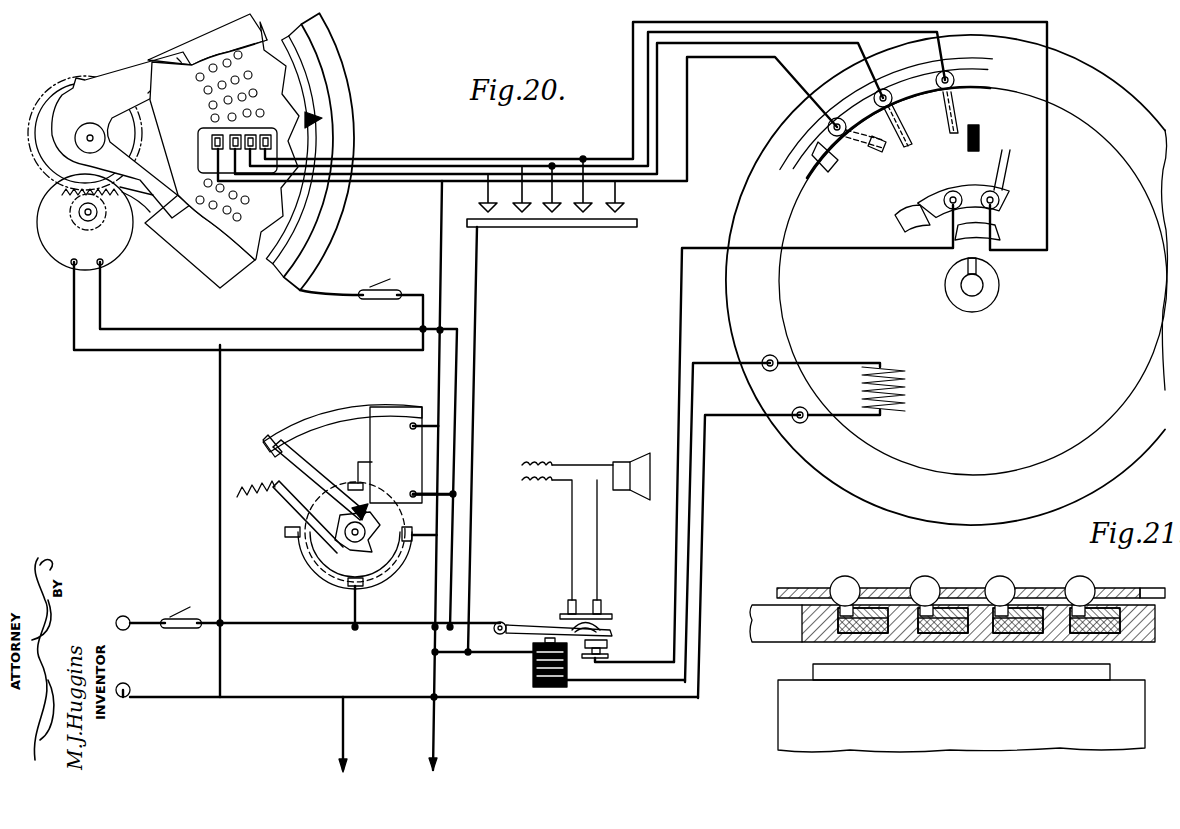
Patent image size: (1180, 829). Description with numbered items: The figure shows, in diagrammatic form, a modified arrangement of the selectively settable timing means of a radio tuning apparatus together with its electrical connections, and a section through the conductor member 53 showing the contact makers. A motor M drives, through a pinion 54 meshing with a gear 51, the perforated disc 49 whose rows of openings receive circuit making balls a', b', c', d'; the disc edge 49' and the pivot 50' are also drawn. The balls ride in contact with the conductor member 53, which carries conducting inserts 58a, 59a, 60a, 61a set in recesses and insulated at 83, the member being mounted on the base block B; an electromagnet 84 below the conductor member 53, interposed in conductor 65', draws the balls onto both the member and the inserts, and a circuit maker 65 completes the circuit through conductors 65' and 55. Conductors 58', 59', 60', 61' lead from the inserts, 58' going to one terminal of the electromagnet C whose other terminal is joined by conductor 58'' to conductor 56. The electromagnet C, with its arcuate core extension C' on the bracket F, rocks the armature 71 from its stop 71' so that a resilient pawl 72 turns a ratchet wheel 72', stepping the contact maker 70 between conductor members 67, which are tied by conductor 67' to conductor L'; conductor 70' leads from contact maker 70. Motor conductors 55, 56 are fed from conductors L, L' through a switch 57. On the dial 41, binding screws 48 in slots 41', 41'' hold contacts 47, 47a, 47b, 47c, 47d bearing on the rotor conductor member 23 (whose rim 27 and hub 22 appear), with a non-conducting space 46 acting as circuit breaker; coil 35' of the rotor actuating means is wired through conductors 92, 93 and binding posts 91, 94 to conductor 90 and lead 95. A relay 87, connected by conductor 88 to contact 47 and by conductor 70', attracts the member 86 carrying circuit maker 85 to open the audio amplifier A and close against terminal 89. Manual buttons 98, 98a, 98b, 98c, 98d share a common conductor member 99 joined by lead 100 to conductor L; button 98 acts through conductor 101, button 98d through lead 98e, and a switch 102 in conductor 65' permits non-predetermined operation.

In FIG. 20, the gear 51 is at (58, 100).
In FIG. 20, the pivot 50' is at (109, 134).
In FIG. 20, the pinion 54 is at (78, 208).
In FIG. 20, the motor M is at (108, 262).
In FIG. 20, the conductor member 53 is at (178, 55).
In FIG. 21, the conductor member 53 is at (1140, 640).
In FIG. 20, the disc 49 is at (200, 141).
In FIG. 21, the disc 49 is at (971, 581).
In FIG. 20, the drum edge 49' is at (353, 36).
In FIG. 20, the circuit maker 65 is at (321, 150).
In FIG. 20, the base block B is at (333, 222).
In FIG. 20, the insulation 83 is at (245, 131).
In FIG. 21, the insulation 83 is at (818, 650).
In FIG. 20, the contact making insert 58a is at (214, 136).
In FIG. 21, the contact making insert 58a is at (870, 610).
In FIG. 20, the contact making insert 59a is at (232, 146).
In FIG. 21, the contact making insert 59a is at (945, 610).
In FIG. 20, the contact making insert 60a is at (248, 150).
In FIG. 21, the contact making insert 60a is at (1022, 612).
In FIG. 20, the contact making insert 61a is at (262, 152).
In FIG. 21, the contact making insert 61a is at (1098, 612).
In FIG. 20, the conductor 61' is at (432, 140).
In FIG. 20, the conductor 60' is at (479, 141).
In FIG. 20, the conductor 101 is at (500, 160).
In FIG. 20, the conductor 59' is at (526, 151).
In FIG. 20, the lead 98e is at (690, 140).
In FIG. 20, the conductor 58' is at (414, 475).
In FIG. 20, the conductor 58'' is at (469, 457).
In FIG. 20, the manually operated circuit maker 98 is at (480, 205).
In FIG. 20, the manually operated circuit maker 98a is at (522, 215).
In FIG. 20, the manually operated circuit maker 98b is at (552, 215).
In FIG. 20, the manually operated circuit maker 98c is at (583, 215).
In FIG. 20, the manually operated circuit maker 98d is at (628, 205).
In FIG. 20, the conductor member 99 is at (490, 230).
In FIG. 20, the lead 100 is at (478, 382).
In FIG. 20, the conductor 55 is at (70, 310).
In FIG. 20, the conductor 56 is at (172, 328).
In FIG. 20, the switch 102 is at (372, 302).
In FIG. 20, the conductor 65' is at (348, 273).
In FIG. 20, the core lateral extension C' is at (342, 412).
In FIG. 20, the electromagnet C is at (411, 455).
In FIG. 20, the bracket F is at (345, 560).
In FIG. 20, the armature 71 is at (320, 472).
In FIG. 20, the stop 71' is at (257, 430).
In FIG. 20, the resilient pawl 72 is at (256, 505).
In FIG. 20, the ratchet wheel 72' is at (294, 534).
In FIG. 20, the conductor members 67 is at (382, 568).
In FIG. 20, the conductor 67' is at (346, 520).
In FIG. 20, the contact maker 70 is at (394, 582).
In FIG. 20, the conductor 70' is at (457, 646).
In FIG. 20, the conductor L' is at (315, 638).
In FIG. 20, the conductor L is at (407, 643).
In FIG. 20, the switch 57 is at (170, 628).
In FIG. 20, the audio amplifier A is at (620, 462).
In FIG. 20, the circuit maker 85 is at (600, 620).
In FIG. 20, the movable member 86 is at (512, 622).
In FIG. 20, the contact terminal 89 is at (612, 645).
In FIG. 20, the electromagnet or relay 87 is at (533, 672).
In FIG. 20, the conductor 88 is at (680, 332).
In FIG. 20, the conductor 90 is at (693, 393).
In FIG. 20, the lead 95 is at (702, 542).
In FIG. 20, the binding post 91 is at (768, 355).
In FIG. 20, the binding post 94 is at (800, 423).
In FIG. 20, the conductor 92 is at (820, 362).
In FIG. 20, the conductor 93 is at (872, 418).
In FIG. 20, the coil 35' is at (909, 389).
In FIG. 20, the rotor conductor member 23 is at (973, 281).
In FIG. 20, the dial rim 27 is at (812, 458).
In FIG. 20, the shaft hub 22 is at (990, 288).
In FIG. 20, the dial 41 is at (886, 128).
In FIG. 20, the slot 41' is at (807, 142).
In FIG. 20, the slot 41'' is at (1046, 200).
In FIG. 20, the binding posts or screws 48 is at (936, 82).
In FIG. 20, the contact 47 is at (900, 200).
In FIG. 20, the contact 47a is at (900, 148).
In FIG. 20, the contact 47b is at (934, 114).
In FIG. 20, the contact 47c is at (1017, 170).
In FIG. 20, the contact 47d is at (875, 152).
In FIG. 20, the non-conducting space 46 is at (982, 138).
In FIG. 21, the circuit making ball a' is at (827, 583).
In FIG. 21, the circuit making ball b' is at (919, 582).
In FIG. 21, the circuit making ball c' is at (998, 582).
In FIG. 21, the circuit making ball d' is at (1080, 582).
In FIG. 21, the electromagnet 84 is at (792, 712).